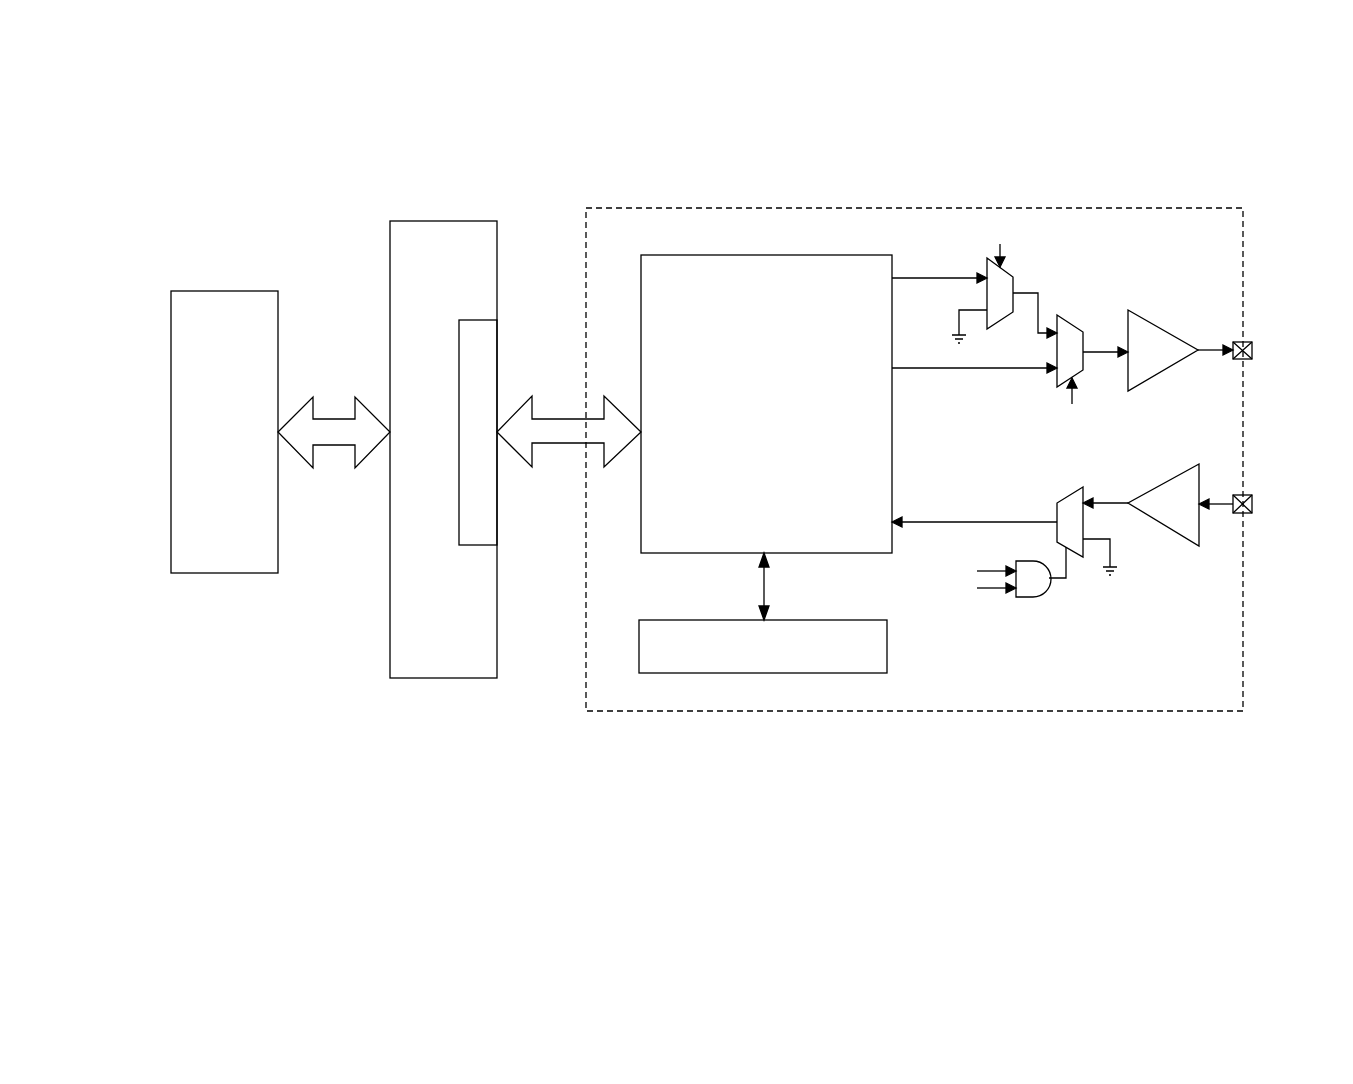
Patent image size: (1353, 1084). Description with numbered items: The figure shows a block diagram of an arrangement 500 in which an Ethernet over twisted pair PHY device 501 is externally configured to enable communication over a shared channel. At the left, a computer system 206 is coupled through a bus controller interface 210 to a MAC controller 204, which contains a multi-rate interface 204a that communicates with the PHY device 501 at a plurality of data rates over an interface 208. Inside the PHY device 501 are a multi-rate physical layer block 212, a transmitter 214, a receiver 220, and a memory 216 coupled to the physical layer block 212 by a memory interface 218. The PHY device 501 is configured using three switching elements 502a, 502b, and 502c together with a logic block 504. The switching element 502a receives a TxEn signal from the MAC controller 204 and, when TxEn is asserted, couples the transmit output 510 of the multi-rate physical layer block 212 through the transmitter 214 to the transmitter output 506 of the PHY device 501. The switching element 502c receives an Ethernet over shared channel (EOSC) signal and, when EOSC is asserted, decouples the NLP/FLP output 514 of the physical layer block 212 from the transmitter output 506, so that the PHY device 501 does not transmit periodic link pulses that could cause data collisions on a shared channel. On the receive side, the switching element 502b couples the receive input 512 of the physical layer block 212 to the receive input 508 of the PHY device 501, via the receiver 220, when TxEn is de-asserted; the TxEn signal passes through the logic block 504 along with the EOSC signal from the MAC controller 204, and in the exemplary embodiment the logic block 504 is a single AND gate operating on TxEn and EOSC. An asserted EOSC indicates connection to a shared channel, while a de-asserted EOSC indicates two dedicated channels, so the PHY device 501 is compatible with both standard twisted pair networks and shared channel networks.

The network system 500 is at (192, 127).
The Ethernet over twisted pair PHY device 501 is at (846, 207).
The MAC controller 204 is at (390, 255).
The multi-rate interface 204a is at (477, 320).
The computer system 206 is at (233, 291).
The interface 208 is at (543, 445).
The bus controller interface 210 is at (353, 458).
The multi-rate physical layer block 212 is at (720, 255).
The transmitter 214 is at (1150, 319).
The memory 216 is at (887, 648).
The memory interface 218 is at (764, 583).
The receiver 220 is at (1173, 476).
The switching element 502a is at (1075, 322).
The switching element 502b is at (1066, 496).
The switching element 502c is at (1013, 280).
The logic block 504 is at (1026, 598).
The transmitter output 506 is at (1252, 345).
The receive input 508 is at (1252, 497).
The transmit output 510 is at (905, 370).
The receive input 512 is at (915, 521).
The NLP/FLP output 514 is at (902, 280).